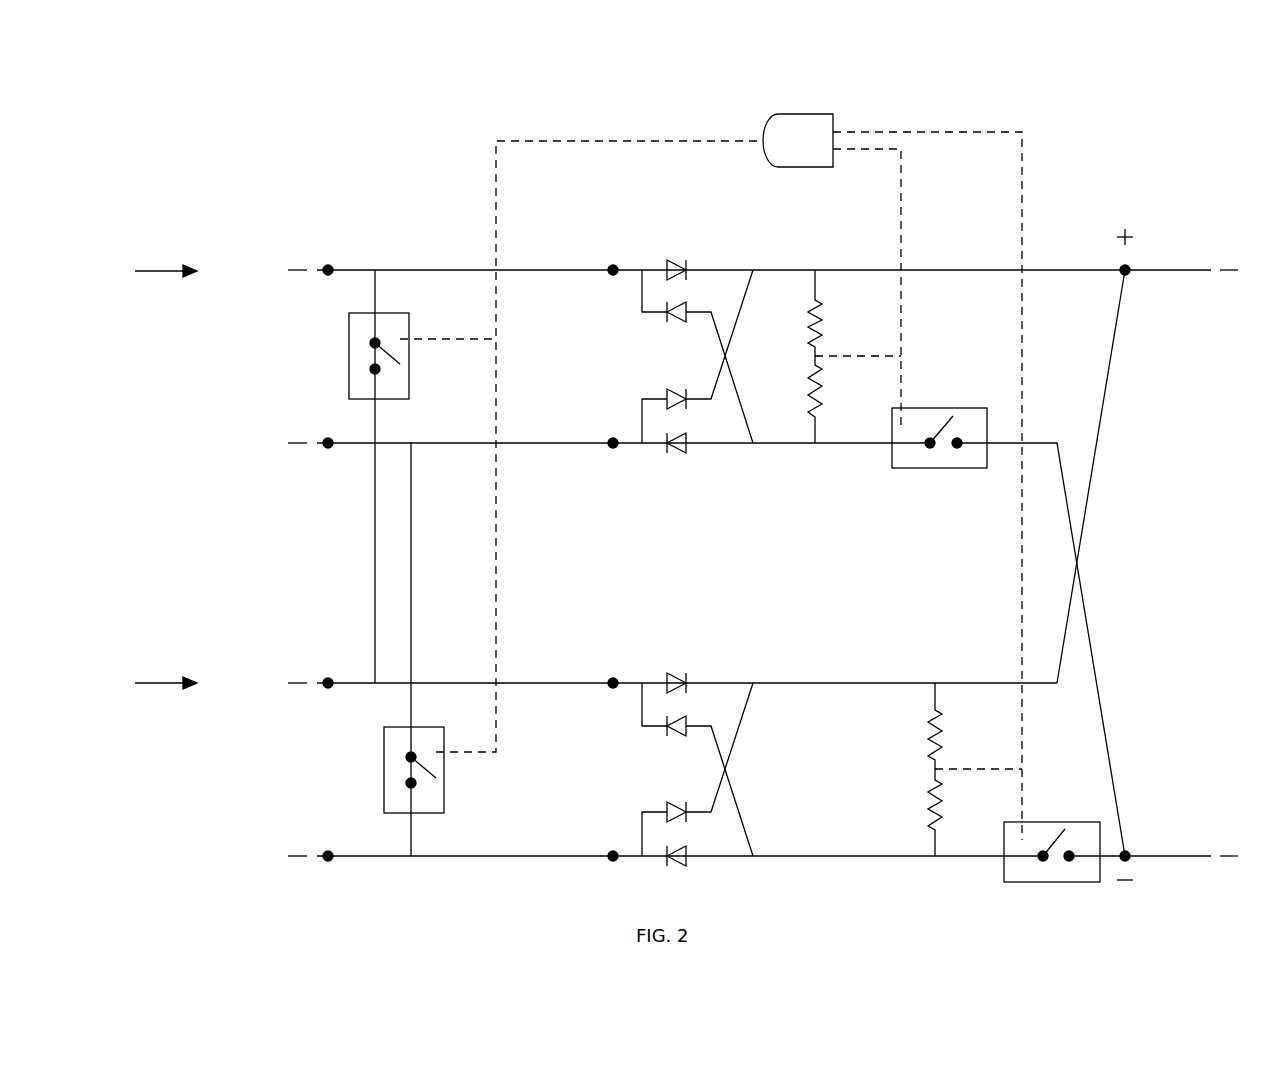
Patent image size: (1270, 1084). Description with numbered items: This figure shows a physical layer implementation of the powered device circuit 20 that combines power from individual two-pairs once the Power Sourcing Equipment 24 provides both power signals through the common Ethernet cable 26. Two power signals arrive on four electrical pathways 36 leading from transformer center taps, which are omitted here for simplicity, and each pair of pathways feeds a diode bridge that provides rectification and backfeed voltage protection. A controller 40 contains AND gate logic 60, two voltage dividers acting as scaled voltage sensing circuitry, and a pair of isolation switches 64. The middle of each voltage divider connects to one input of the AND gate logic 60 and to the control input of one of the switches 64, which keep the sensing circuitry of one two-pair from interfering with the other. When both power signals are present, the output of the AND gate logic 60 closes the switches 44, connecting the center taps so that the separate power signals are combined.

The powered device circuit 20 is at (1228, 83).
The Power Sourcing Equipment 24 is at (165, 551).
The Ethernet cable 26 is at (165, 597).
The electrical pathways 36 is at (608, 198).
The controller 40 is at (440, 80).
The switches 44 is at (410, 240).
The AND gate logic 60 is at (765, 130).
The switches 64 is at (1055, 326).